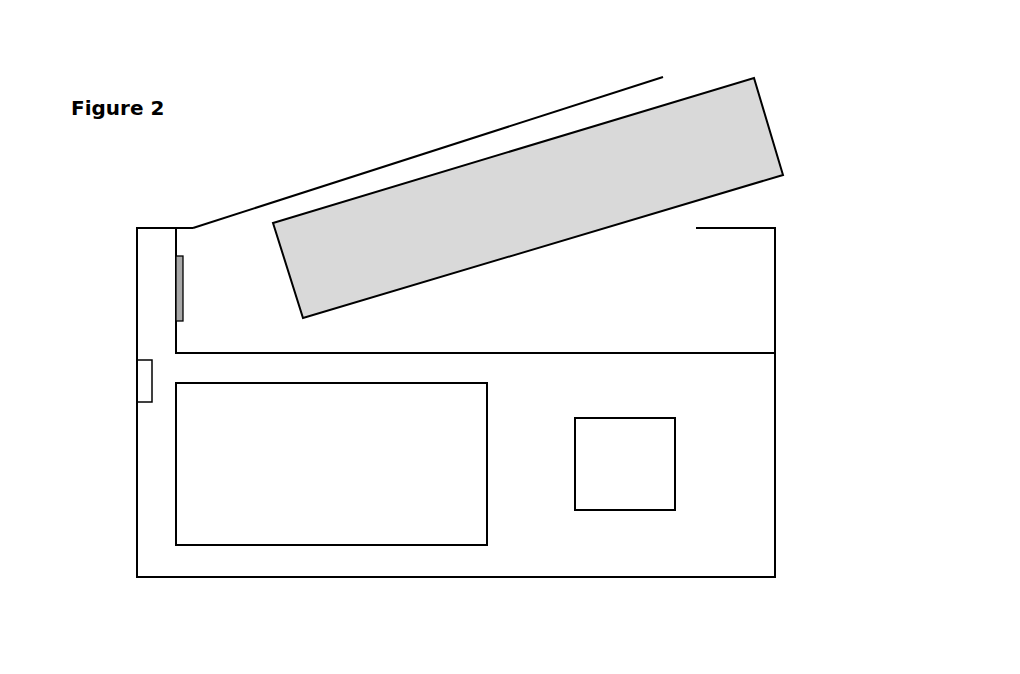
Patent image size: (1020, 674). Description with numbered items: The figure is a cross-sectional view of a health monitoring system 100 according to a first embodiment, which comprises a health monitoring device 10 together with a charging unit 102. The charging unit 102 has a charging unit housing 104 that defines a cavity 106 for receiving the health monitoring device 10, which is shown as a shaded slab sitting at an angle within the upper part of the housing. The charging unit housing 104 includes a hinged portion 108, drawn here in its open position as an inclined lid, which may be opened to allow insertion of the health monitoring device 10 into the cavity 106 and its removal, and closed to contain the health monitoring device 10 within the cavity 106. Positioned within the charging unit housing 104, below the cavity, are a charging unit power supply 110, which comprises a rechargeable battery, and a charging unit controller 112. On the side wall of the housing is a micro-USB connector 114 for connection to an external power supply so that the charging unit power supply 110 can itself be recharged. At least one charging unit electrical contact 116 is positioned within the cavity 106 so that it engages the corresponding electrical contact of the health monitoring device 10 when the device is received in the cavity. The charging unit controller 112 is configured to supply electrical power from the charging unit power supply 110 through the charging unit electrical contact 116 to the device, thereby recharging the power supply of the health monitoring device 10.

The health monitoring system 100 is at (105, 427).
The charging unit 102 is at (780, 402).
The charging unit housing 104 is at (775, 483).
The cavity 106 is at (745, 277).
The hinged portion 108 is at (537, 117).
The health monitoring device 10 is at (768, 113).
The charging unit power supply 110 is at (436, 497).
The charging unit controller 112 is at (617, 475).
The micro-USB connector 114 is at (143, 376).
The charging unit electrical contact 116 is at (176, 277).